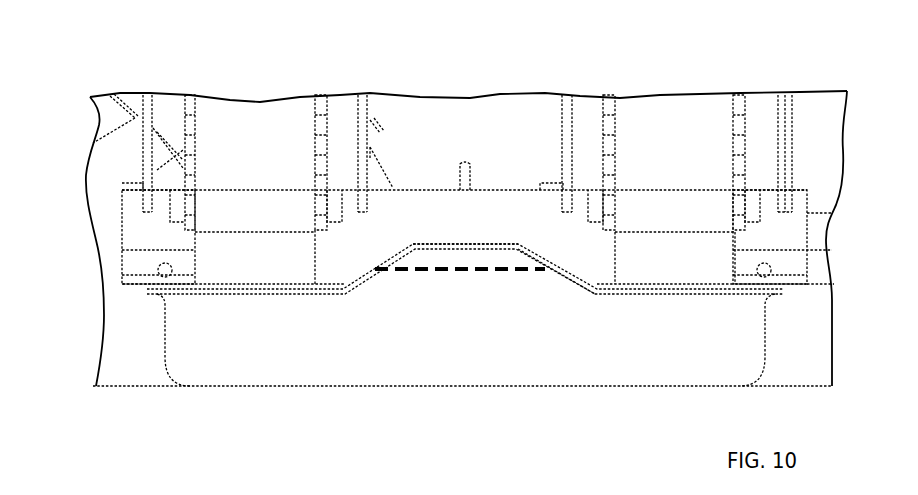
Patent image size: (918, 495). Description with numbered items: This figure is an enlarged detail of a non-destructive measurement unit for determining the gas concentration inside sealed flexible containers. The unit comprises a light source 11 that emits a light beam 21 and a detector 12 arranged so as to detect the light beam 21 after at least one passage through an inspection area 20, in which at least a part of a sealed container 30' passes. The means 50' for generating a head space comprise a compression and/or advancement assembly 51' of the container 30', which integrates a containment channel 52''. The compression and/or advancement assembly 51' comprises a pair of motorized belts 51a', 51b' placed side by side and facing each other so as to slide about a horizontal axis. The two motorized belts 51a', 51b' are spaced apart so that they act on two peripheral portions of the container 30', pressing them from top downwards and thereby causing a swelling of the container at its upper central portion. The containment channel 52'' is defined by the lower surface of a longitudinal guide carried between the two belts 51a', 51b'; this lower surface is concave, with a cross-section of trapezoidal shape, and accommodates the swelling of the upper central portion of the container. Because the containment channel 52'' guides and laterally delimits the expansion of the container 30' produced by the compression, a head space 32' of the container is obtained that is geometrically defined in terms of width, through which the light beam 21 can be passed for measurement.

The light source 11 is at (822, 115).
The detector 12 is at (167, 108).
The inspection area 20 is at (504, 288).
The light beam 21 is at (465, 267).
The container 30' is at (466, 340).
The head space 32' is at (465, 151).
The means for generating a head space 50' is at (426, 238).
The compression and/or advancement assembly 51' is at (121, 186).
The motorized belt 51a' is at (303, 122).
The motorized belt 51b' is at (677, 130).
The containment channel 52'' is at (465, 170).